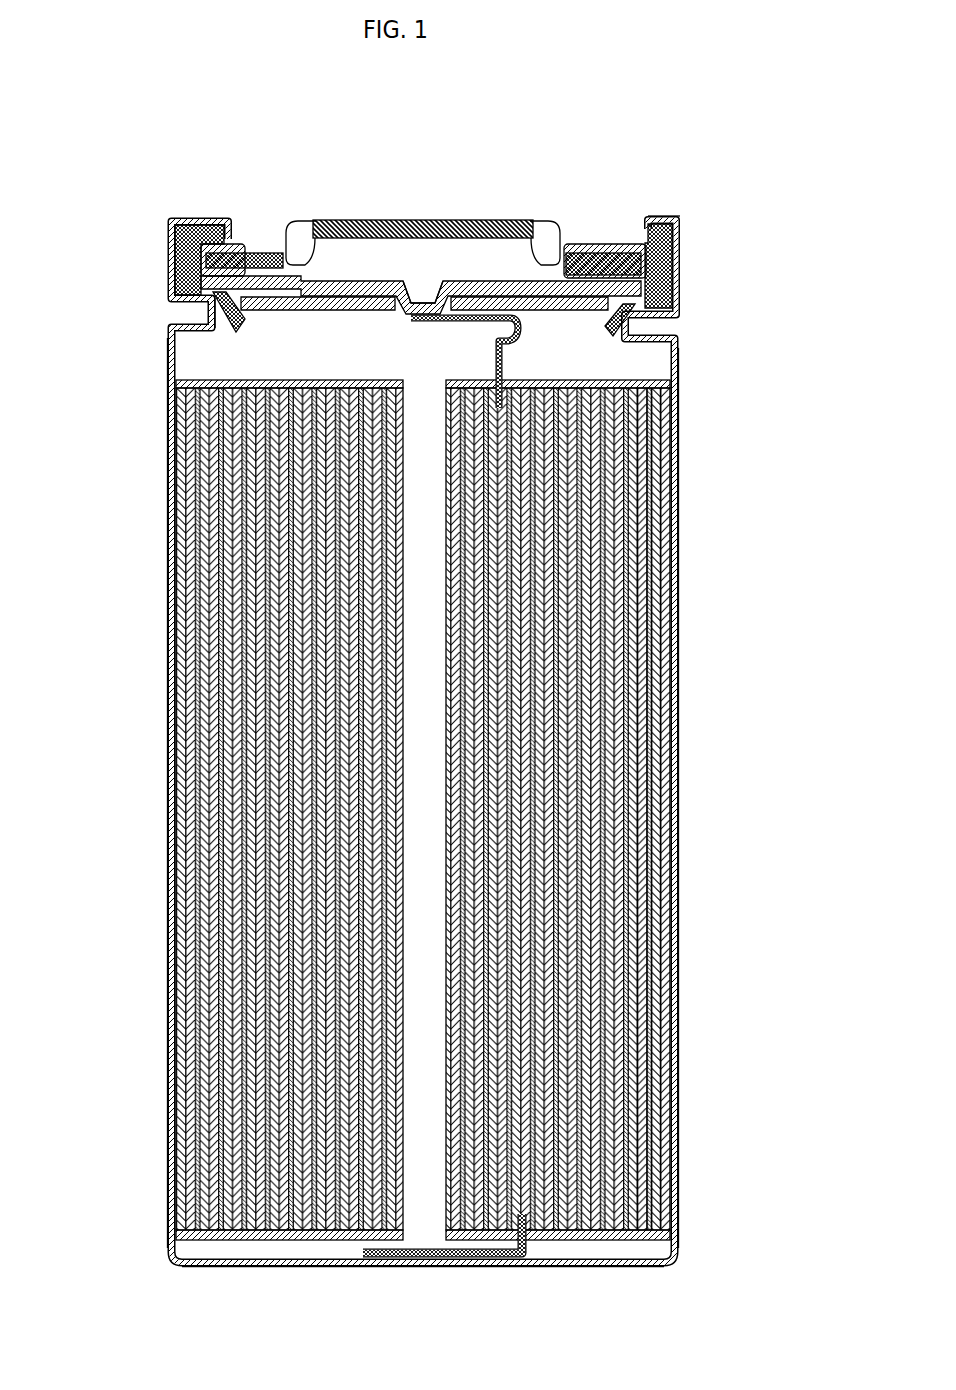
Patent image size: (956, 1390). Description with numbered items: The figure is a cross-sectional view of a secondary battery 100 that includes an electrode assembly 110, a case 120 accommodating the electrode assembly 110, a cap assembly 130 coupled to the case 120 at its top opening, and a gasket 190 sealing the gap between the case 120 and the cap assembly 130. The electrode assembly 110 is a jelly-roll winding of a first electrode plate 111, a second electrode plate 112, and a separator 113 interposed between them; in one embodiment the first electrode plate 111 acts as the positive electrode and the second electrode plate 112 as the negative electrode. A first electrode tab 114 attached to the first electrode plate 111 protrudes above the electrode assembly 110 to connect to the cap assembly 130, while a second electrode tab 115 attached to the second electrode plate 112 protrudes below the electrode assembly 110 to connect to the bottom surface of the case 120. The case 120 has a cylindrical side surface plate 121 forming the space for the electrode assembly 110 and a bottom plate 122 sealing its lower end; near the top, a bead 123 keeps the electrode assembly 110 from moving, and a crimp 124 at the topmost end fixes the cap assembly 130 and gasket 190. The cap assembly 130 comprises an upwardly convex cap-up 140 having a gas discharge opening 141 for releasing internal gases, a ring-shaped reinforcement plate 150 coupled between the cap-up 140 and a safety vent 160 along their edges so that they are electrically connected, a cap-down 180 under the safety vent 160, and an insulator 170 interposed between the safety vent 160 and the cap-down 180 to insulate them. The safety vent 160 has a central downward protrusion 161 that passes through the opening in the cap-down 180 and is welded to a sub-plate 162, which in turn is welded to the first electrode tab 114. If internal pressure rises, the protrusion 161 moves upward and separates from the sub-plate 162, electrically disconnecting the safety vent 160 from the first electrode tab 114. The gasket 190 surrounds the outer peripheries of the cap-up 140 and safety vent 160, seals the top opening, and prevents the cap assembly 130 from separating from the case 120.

The secondary battery 100 is at (118, 141).
The electrode assembly 110 is at (757, 423).
The first electrode plate 111 is at (652, 504).
The second electrode plate 112 is at (654, 428).
The separator 113 is at (653, 466).
The first electrode tab 114 is at (497, 352).
The second electrode tab 115 is at (462, 1258).
The case 120 is at (684, 624).
The side surface plate 121 is at (668, 1026).
The bottom plate 122 is at (556, 1258).
The bead 123 is at (172, 310).
The crimp 124 is at (657, 212).
The cap assembly 130 is at (618, 137).
The cap-up 140 is at (400, 212).
The gas discharge opening 141 is at (298, 245).
The reinforcement plate 150 is at (585, 244).
The safety vent 160 is at (553, 262).
The protrusion 161 is at (414, 292).
The sub-plate 162 is at (503, 289).
The insulator 170 is at (244, 238).
The cap-down 180 is at (348, 272).
The gasket 190 is at (672, 252).